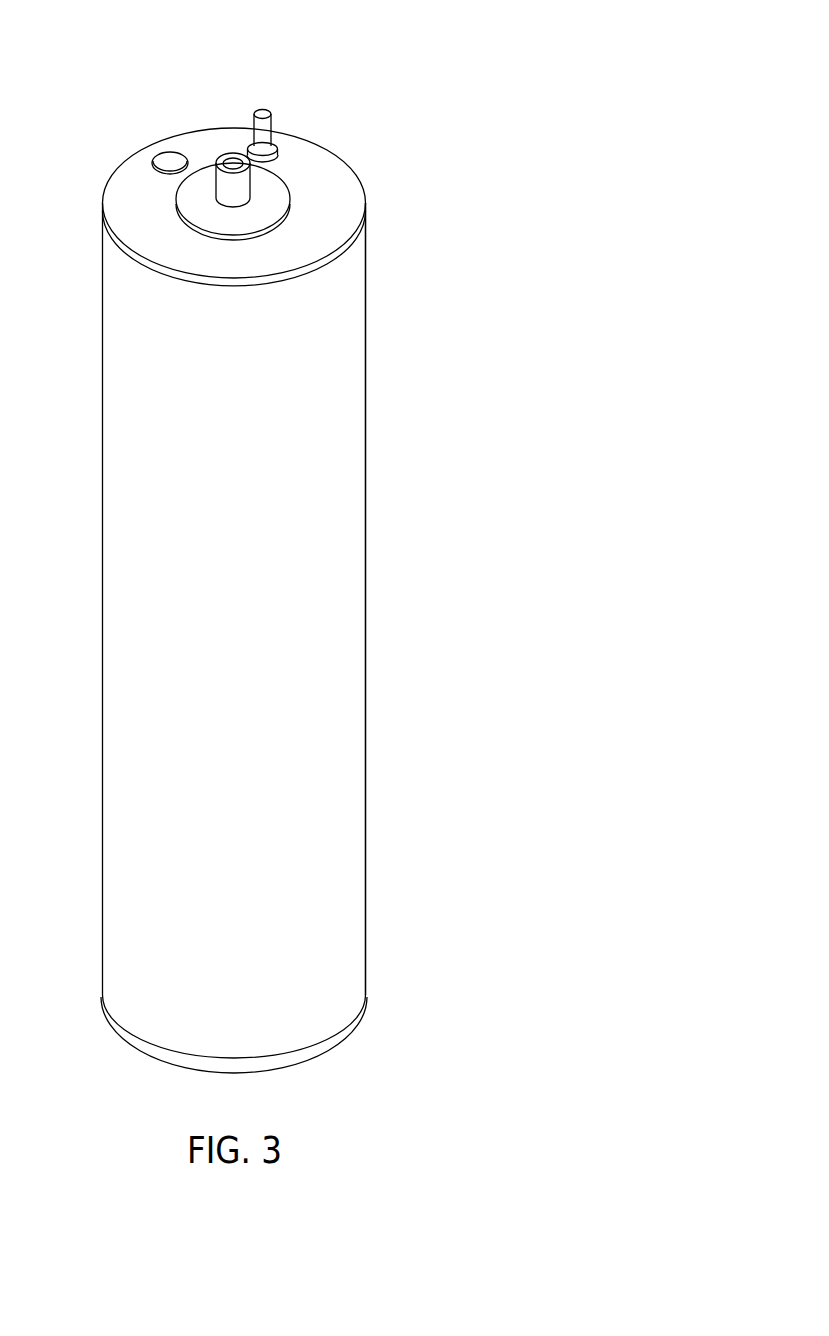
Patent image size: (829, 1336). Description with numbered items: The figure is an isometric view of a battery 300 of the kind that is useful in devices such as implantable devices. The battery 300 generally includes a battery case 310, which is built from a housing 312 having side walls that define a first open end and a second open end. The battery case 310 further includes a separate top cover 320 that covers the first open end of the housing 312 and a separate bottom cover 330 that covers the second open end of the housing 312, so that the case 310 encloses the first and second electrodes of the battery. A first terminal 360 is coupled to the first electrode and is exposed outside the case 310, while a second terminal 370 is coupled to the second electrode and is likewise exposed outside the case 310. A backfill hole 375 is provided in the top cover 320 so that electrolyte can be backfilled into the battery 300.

The battery 300 is at (243, 570).
The battery case 310 is at (102, 661).
The housing 312 is at (366, 599).
The top cover 320 is at (323, 183).
The bottom cover 330 is at (283, 1068).
The first terminal 360 is at (263, 112).
The second terminal 370 is at (233, 160).
The backfill hole 375 is at (169, 165).